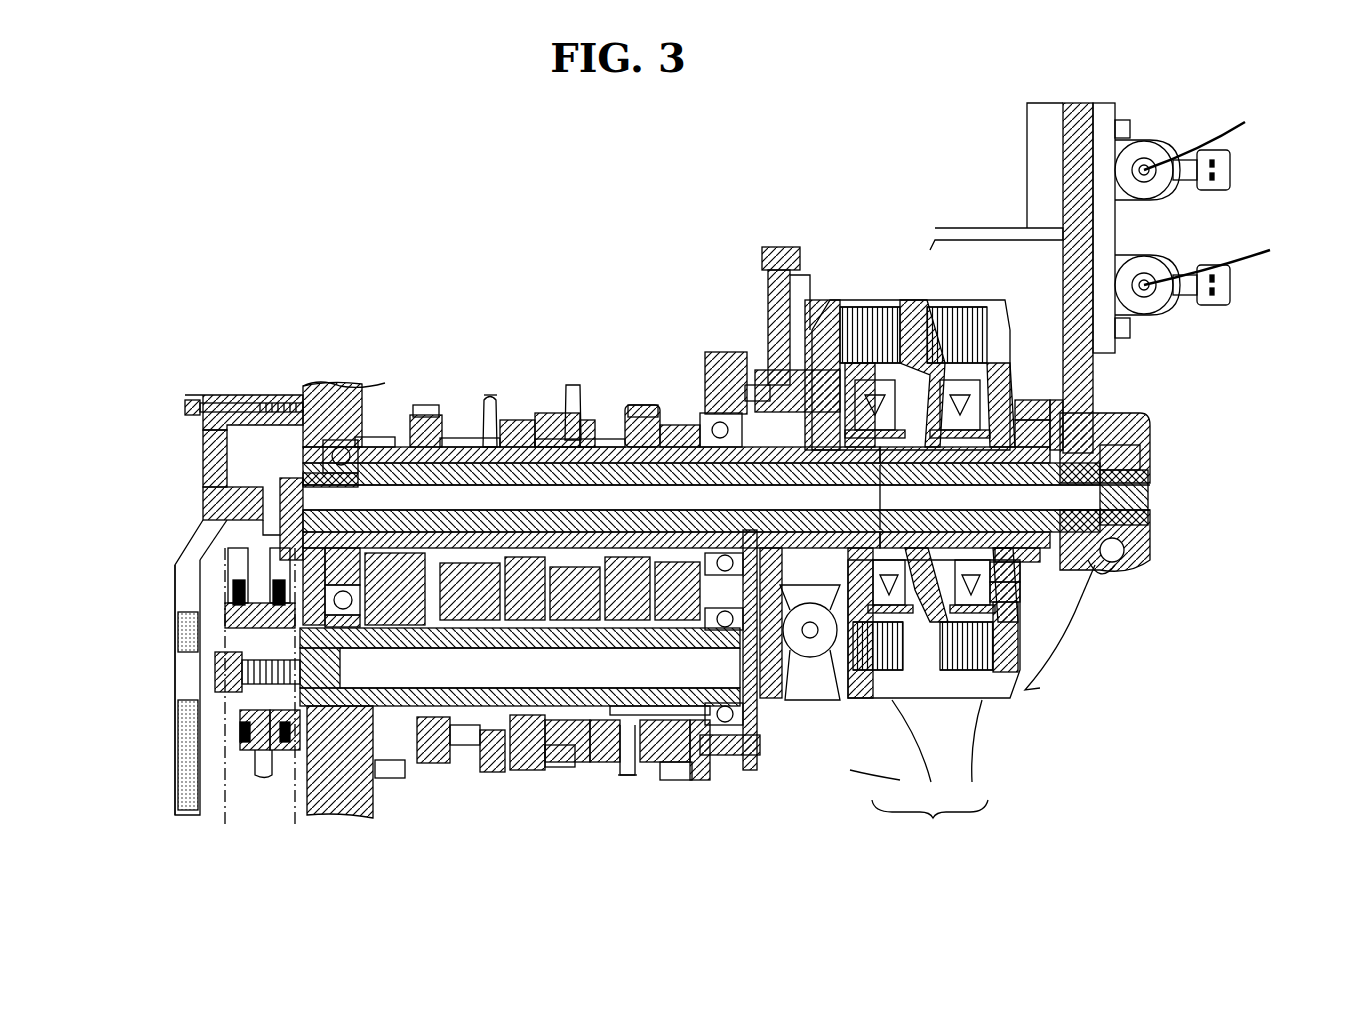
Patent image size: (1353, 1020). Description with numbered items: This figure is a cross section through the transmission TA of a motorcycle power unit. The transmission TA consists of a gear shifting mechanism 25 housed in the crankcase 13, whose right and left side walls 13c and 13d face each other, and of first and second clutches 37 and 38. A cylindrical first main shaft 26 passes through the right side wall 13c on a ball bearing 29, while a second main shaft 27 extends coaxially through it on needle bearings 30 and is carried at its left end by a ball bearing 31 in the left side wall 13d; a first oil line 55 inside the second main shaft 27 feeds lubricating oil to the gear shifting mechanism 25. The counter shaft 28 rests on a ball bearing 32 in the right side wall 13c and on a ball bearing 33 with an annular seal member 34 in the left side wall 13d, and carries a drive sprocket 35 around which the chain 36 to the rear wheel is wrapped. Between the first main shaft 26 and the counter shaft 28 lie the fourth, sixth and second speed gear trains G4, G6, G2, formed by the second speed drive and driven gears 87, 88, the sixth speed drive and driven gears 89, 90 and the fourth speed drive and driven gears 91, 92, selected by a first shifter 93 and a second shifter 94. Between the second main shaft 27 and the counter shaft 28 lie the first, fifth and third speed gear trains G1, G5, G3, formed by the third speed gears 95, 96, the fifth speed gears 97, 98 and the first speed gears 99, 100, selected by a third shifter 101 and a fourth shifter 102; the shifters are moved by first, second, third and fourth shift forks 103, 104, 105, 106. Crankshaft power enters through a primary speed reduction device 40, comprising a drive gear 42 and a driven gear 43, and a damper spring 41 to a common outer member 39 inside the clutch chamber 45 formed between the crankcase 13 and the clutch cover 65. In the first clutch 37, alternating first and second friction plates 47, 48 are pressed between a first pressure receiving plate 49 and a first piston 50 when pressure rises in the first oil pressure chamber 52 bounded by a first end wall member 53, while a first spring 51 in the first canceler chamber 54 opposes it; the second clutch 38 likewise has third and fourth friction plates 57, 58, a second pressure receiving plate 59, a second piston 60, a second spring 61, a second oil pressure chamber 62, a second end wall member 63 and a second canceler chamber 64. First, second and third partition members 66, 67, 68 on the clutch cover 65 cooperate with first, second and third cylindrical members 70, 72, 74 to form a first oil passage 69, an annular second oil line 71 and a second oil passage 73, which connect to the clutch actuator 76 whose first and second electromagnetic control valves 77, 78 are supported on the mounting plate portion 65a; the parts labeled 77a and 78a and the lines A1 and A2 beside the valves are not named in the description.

The crankcase 13 is at (298, 385).
The right side wall 13c is at (725, 352).
The left side wall 13d is at (320, 385).
The gear shifting mechanism 25 is at (785, 760).
The first main shaft 26 is at (605, 439).
The second main shaft 27 is at (455, 438).
The counter shaft 28 is at (650, 716).
The ball bearing 29 is at (712, 413).
The needle bearings 30 is at (560, 497).
The ball bearing 31 is at (328, 458).
The ball bearing 32 is at (738, 714).
The ball bearing 33 is at (350, 652).
The annular seal member 34 is at (290, 760).
The drive sprocket 35 is at (238, 605).
The chain 36 is at (223, 812).
The first clutch 37 is at (892, 700).
The second clutch 38 is at (982, 700).
The outer member 39 is at (875, 300).
The primary speed reduction device 40 is at (802, 276).
The damper spring 41 is at (838, 700).
The drive gear 42 is at (770, 262).
The driven gear 43 is at (770, 385).
The clutch chamber 45 is at (1018, 300).
The first friction plates 47 is at (862, 307).
The second friction plates 48 is at (868, 698).
The first pressure receiving plate 49 is at (825, 300).
The first piston 50 is at (912, 300).
The first spring 51 is at (790, 372).
The first oil pressure chamber 52 is at (1020, 400).
The first end wall member 53 is at (1000, 380).
The first canceler chamber 54 is at (925, 363).
The first oil line 55 is at (638, 507).
The third friction plates 57 is at (965, 307).
The fourth friction plates 58 is at (963, 690).
The second pressure receiving plate 59 is at (928, 672).
The second piston 60 is at (1000, 672).
The second spring 61 is at (1020, 573).
The second oil pressure chamber 62 is at (1020, 593).
The second end wall member 63 is at (1068, 615).
The second canceler chamber 64 is at (1018, 635).
The clutch cover 65 is at (1093, 375).
The mounting plate portion 65a is at (1065, 125).
The first partition member 66 is at (1125, 520).
The second partition member 67 is at (1100, 413).
The third partition member 68 is at (1093, 570).
The first oil passage 69 is at (905, 497).
The first cylindrical member 70 is at (1025, 425).
The second oil line 71 is at (1135, 460).
The second cylindrical member 72 is at (1035, 555).
The second oil passage 73 is at (1118, 568).
The third cylindrical member 74 is at (1055, 400).
The clutch actuator 76 is at (980, 186).
The first electromagnetic control valve 77 is at (1125, 265).
The connector 77a is at (1160, 258).
The second electromagnetic control valve 78 is at (1118, 150).
The connector 78a is at (1145, 140).
The second speed drive gear 87 is at (675, 425).
The second speed driven gear 88 is at (696, 782).
The sixth speed drive gear 89 is at (640, 405).
The sixth speed driven gear 90 is at (662, 762).
The fourth speed drive gear 91 is at (558, 413).
The fourth speed driven gear 92 is at (560, 762).
The first shifter 93 is at (620, 740).
The second shifter 94 is at (587, 420).
The third speed drive gear 95 is at (517, 420).
The third speed driven gear 96 is at (525, 768).
The fifth speed drive gear 97 is at (430, 405).
The fifth speed driven gear 98 is at (434, 763).
The first speed drive gear 99 is at (378, 437).
The first speed driven gear 100 is at (400, 778).
The third shifter 101 is at (486, 398).
The fourth shifter 102 is at (492, 772).
The first shift fork 103 is at (628, 776).
The second shift fork 104 is at (573, 385).
The third shift fork 105 is at (492, 395).
The fourth shift fork 106 is at (470, 760).
The first speed gear train G1 is at (405, 800).
The second speed gear train G2 is at (705, 778).
The third speed gear train G3 is at (522, 772).
The fourth speed gear train G4 is at (570, 765).
The fifth speed gear train G5 is at (425, 414).
The sixth speed gear train G6 is at (650, 404).
The first axis A1 is at (1221, 259).
The second axis A2 is at (1206, 139).
The transmission TA is at (930, 820).